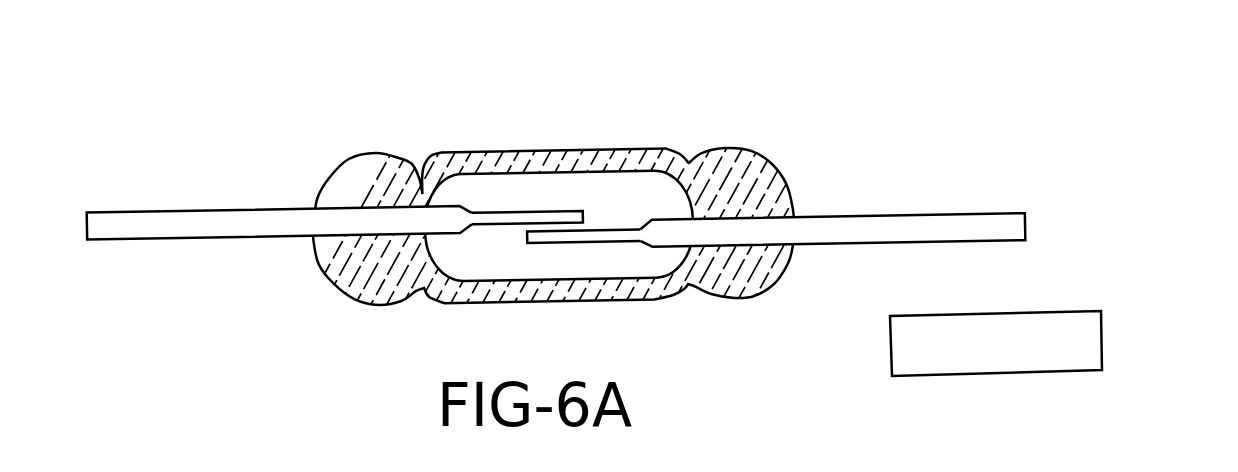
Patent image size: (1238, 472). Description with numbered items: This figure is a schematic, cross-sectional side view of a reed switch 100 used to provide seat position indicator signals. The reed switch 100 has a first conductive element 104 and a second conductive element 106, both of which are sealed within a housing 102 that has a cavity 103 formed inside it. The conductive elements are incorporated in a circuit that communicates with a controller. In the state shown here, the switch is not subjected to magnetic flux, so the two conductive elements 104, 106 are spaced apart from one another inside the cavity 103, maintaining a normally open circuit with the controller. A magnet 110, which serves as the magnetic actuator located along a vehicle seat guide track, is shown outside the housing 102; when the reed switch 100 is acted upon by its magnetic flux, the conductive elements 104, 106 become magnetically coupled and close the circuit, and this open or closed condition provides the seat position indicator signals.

The reed switch 100 is at (556, 189).
The housing 102 is at (768, 160).
The cavity 103 is at (482, 196).
The first conductive element 104 is at (908, 213).
The second conductive element 106 is at (220, 237).
The magnet 110 is at (1102, 340).